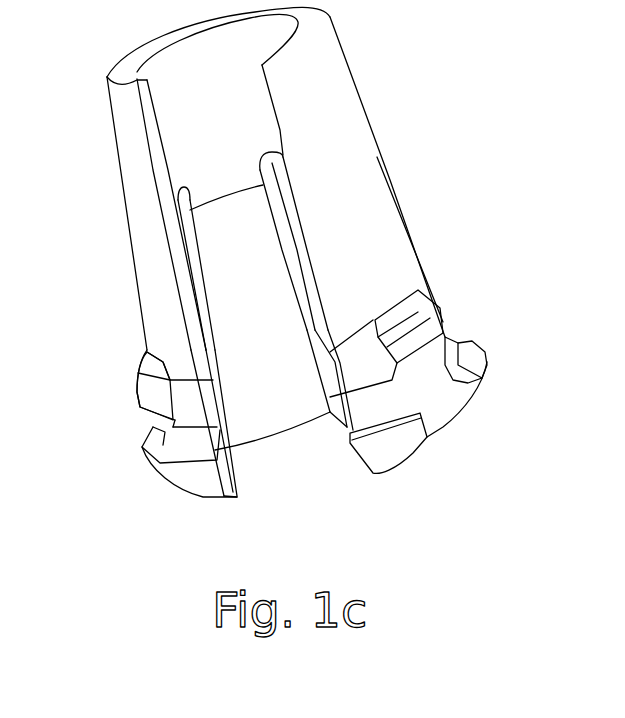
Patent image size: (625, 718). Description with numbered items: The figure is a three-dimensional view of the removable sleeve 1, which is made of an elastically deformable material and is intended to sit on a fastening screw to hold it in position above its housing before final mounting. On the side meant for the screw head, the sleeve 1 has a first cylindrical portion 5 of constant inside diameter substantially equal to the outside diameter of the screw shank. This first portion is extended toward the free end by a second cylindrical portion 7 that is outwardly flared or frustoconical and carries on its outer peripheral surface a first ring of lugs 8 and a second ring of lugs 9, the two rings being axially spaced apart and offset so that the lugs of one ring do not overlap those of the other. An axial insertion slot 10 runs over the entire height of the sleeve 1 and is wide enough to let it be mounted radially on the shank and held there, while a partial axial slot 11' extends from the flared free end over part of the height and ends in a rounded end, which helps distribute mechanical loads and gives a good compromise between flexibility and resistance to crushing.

The sleeve 1 is at (302, 284).
The first cylindrical portion 5 is at (73, 70).
The second cylindrical portion 7 is at (102, 260).
The first ring of lugs 8 is at (405, 435).
The second ring of lugs 9 is at (165, 383).
The axial insertion slot 10 is at (267, 460).
The partial axial slot 11' is at (331, 483).